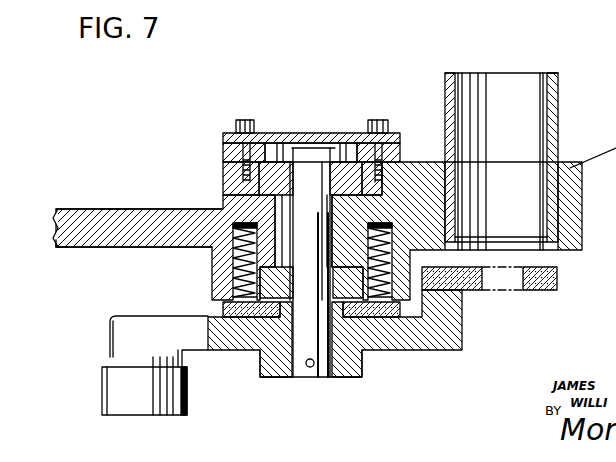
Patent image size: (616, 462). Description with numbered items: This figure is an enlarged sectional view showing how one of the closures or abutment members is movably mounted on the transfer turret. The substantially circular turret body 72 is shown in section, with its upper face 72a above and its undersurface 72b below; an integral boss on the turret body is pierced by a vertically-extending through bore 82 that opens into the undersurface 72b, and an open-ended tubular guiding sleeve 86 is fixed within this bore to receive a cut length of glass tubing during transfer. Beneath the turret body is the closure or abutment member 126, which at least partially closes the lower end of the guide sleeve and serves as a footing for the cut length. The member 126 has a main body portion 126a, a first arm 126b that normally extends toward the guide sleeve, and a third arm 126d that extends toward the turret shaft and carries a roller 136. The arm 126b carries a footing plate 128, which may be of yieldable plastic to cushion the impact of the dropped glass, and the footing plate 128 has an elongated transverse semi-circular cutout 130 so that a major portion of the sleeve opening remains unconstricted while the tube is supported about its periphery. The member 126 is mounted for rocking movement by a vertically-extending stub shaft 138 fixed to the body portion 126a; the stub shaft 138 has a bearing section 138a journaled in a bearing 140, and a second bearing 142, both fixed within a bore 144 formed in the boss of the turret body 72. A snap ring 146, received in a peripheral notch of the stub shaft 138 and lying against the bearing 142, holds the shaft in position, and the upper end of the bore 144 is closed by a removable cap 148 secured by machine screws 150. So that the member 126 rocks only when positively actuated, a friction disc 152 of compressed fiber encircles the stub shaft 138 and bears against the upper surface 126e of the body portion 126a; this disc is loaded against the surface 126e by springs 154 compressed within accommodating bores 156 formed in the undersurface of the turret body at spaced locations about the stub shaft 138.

The turret body 72 is at (77, 229).
The upper face of turret body 72a is at (111, 209).
The undersurface of turret body 72b is at (65, 249).
The through bore 82 is at (545, 240).
The tubular guiding sleeve 86 is at (552, 120).
The closure or abutment member 126 is at (466, 338).
The main body portion 126a is at (367, 352).
The first arm 126b is at (437, 343).
The third arm 126d is at (118, 336).
The upper surface of body portion 126e is at (215, 312).
The footing plate 128 is at (555, 288).
The semi-circular cutout 130 is at (482, 283).
The roller 136 is at (110, 398).
The stub shaft 138 is at (330, 378).
The bearing section of stub shaft 138a is at (312, 170).
The bearing 140 is at (280, 278).
The bearing 142 is at (272, 173).
The bore 144 is at (283, 213).
The snap ring 146 is at (285, 150).
The removable cap 148 is at (268, 133).
The machine screws 150 is at (244, 120).
The friction disc 152 is at (228, 305).
The springs 154 is at (245, 273).
The bores 156 is at (235, 253).